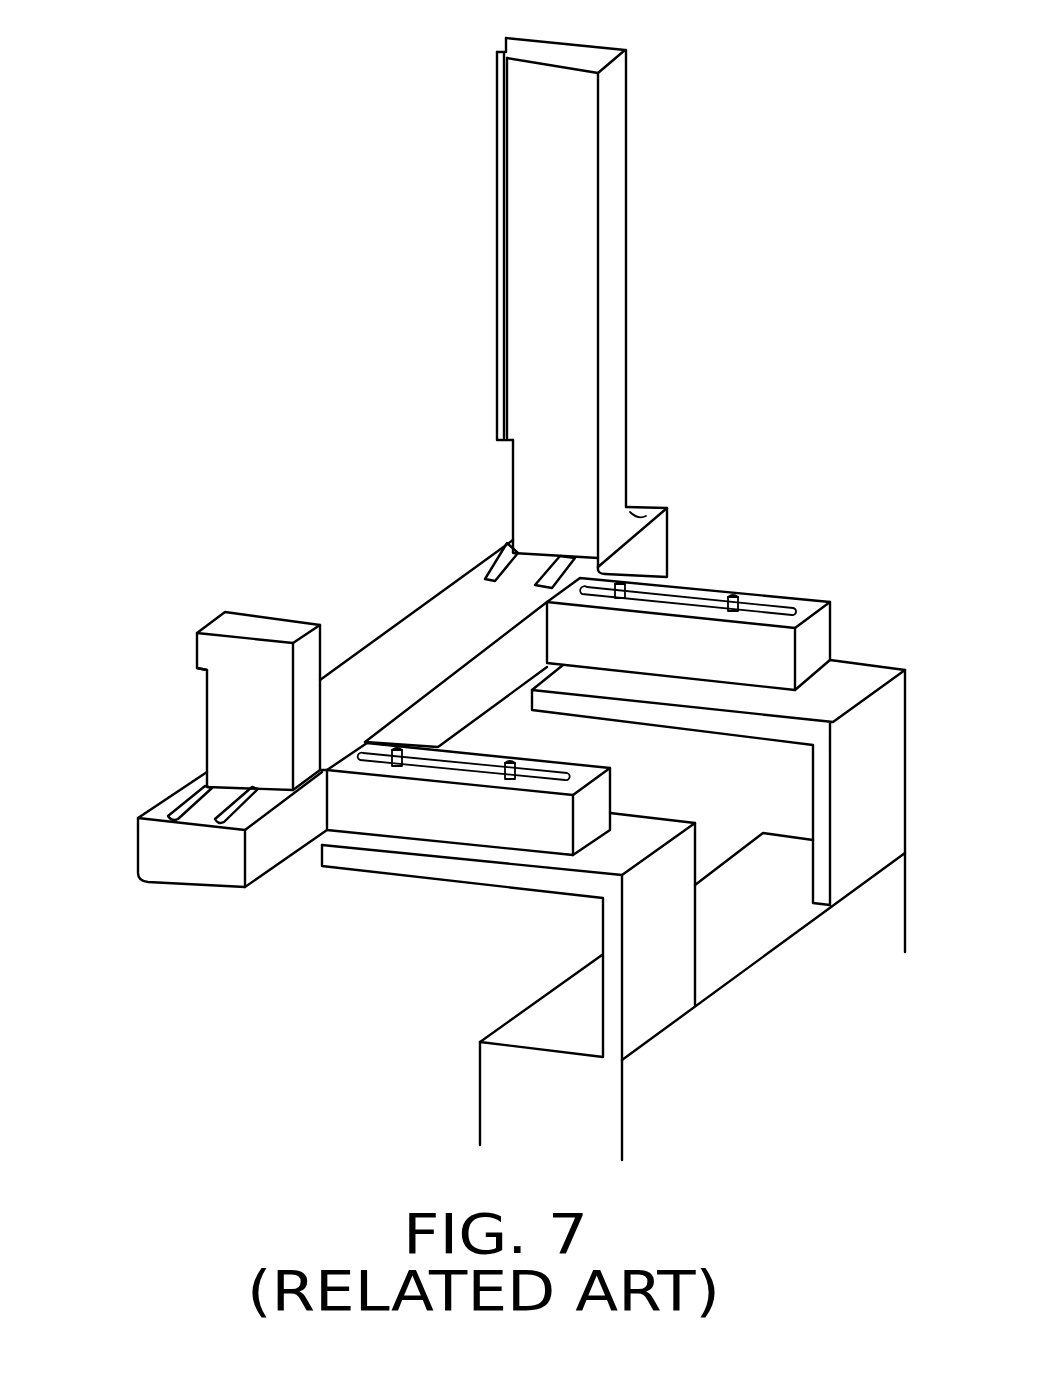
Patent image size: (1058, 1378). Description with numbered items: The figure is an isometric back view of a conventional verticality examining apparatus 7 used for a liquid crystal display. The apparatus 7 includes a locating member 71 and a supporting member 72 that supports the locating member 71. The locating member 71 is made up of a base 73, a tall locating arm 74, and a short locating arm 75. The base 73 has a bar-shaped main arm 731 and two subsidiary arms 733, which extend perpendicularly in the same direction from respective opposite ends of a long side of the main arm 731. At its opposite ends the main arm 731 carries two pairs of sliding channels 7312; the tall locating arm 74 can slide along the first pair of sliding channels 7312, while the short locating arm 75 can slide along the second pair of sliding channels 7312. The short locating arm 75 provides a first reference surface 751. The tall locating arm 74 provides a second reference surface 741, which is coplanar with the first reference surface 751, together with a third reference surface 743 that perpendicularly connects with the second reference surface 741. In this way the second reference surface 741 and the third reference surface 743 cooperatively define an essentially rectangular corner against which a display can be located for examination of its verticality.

The verticality examining apparatus 7 is at (305, 231).
The locating member 71 is at (647, 242).
The tall locating arm 74 is at (597, 54).
The second reference surface 741 is at (500, 97).
The third reference surface 743 is at (504, 50).
The supporting member 72 is at (388, 805).
The base 73 is at (147, 843).
The main arm 731 is at (421, 648).
The sliding channels 7312 is at (193, 803).
The subsidiary arms 733 is at (693, 594).
The short locating arm 75 is at (258, 630).
The first reference surface 751 is at (197, 653).